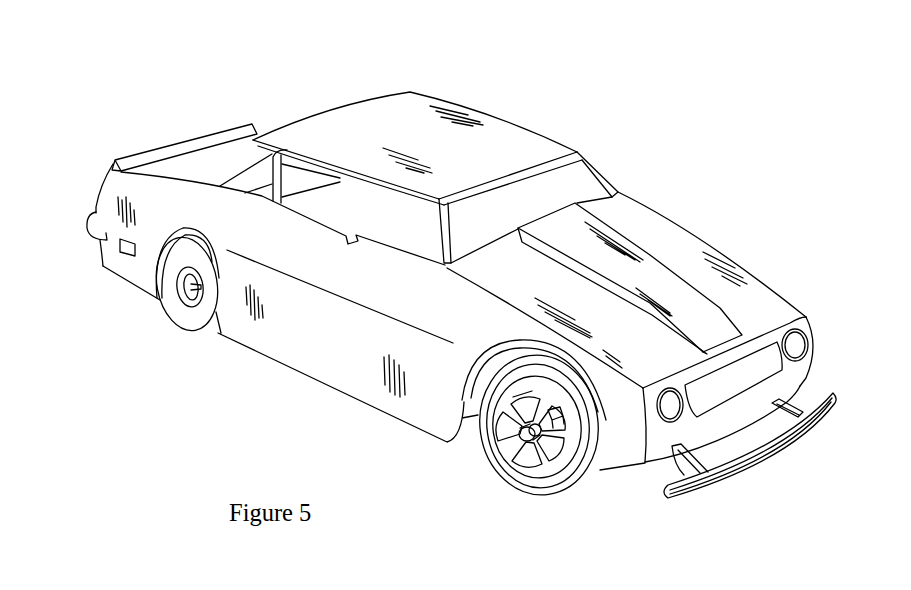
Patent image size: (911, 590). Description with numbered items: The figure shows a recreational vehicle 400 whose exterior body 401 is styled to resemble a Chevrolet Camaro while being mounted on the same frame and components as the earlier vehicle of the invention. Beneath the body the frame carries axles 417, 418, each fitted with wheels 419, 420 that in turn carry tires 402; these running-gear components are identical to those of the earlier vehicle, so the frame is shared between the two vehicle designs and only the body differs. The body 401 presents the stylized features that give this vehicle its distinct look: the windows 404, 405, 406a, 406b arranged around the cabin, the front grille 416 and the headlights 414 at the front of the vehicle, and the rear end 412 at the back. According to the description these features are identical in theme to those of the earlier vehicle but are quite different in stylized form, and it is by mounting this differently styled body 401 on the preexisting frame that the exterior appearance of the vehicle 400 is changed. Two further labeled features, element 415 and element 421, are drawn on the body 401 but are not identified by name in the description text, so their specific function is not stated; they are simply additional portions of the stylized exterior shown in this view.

The vehicle 400 is at (788, 39).
The exterior body 401 is at (98, 178).
The tire 402 is at (188, 322).
The window 404 is at (538, 203).
The window 405 is at (266, 173).
The window 406a is at (585, 173).
The window 406b is at (299, 188).
The rear end 412 is at (118, 262).
The headlight 414 is at (798, 343).
The hood panel 415 is at (645, 268).
The front grille 416 is at (753, 377).
The axle 417 is at (528, 440).
The axle 418 is at (192, 287).
The wheel 419 is at (200, 298).
The wheel 420 is at (508, 447).
The roof 421 is at (399, 125).